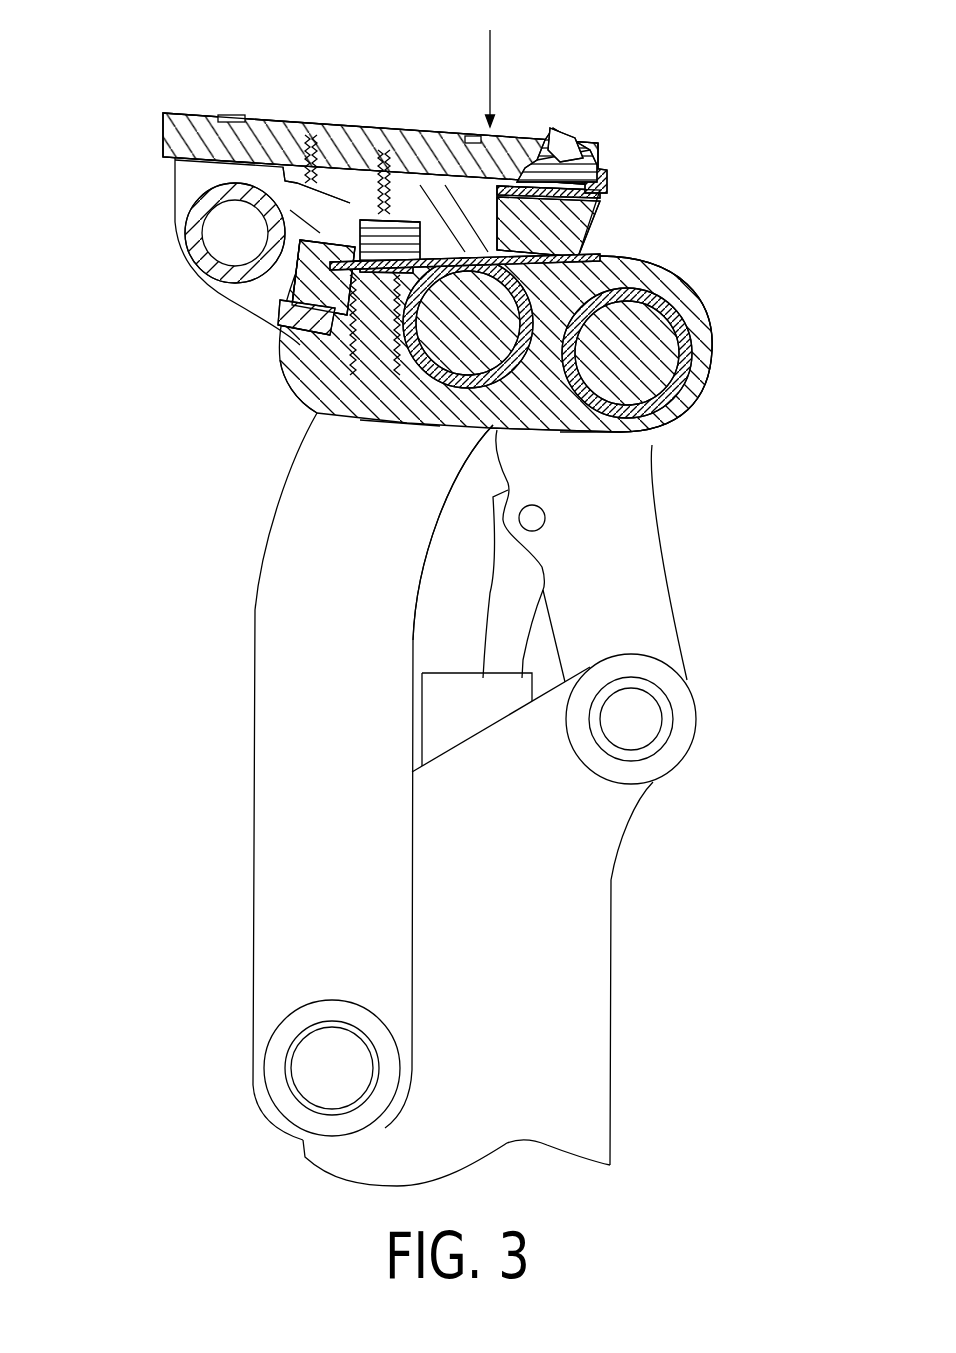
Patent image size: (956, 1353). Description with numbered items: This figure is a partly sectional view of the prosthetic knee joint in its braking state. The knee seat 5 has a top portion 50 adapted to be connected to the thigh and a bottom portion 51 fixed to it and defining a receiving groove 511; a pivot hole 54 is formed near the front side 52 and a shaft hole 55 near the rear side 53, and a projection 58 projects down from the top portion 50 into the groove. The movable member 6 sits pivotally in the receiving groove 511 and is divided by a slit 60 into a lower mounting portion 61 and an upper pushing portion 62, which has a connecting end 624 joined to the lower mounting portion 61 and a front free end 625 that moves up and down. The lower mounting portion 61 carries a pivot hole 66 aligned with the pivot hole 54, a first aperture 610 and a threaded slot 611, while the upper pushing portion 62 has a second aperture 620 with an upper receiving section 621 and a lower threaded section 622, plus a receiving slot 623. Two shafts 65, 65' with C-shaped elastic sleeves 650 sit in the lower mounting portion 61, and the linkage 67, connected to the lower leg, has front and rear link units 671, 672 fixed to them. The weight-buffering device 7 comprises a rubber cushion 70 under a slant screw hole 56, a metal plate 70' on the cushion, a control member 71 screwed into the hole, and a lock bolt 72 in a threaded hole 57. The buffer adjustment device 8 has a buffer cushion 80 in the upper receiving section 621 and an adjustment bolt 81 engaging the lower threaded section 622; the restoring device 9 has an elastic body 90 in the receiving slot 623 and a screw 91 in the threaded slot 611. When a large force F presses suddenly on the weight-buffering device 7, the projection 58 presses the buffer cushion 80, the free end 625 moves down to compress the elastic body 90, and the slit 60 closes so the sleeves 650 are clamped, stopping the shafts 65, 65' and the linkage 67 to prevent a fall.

The knee seat 5 is at (200, 108).
The top portion 50 is at (163, 127).
The receiving groove 511 is at (188, 172).
The front side 52 is at (175, 212).
The pivot hole 54 is at (283, 273).
The pivot hole 66 is at (283, 273).
The receiving slot 623 is at (275, 325).
The elastic body 90 is at (300, 318).
The screw 91 is at (305, 333).
The restoring device 9 is at (280, 356).
The threaded slot 611 is at (355, 378).
The first aperture 610 is at (313, 413).
The adjustment bolt 81 is at (372, 400).
The buffer adjustment device 8 is at (412, 222).
The buffer cushion 80 is at (405, 220).
The projection 58 is at (407, 214).
The second aperture 620 is at (362, 215).
The front free end 625 is at (290, 210).
The lower threaded section 622 is at (328, 240).
The upper receiving section 621 is at (440, 255).
The large force F is at (488, 63).
The weight-buffering device 7 is at (512, 193).
The rubber cushion 70 is at (524, 227).
The metal plate 70' is at (584, 197).
The lock bolt 72 is at (607, 180).
The threaded hole 57 is at (590, 166).
The control member 71 is at (560, 158).
The slant screw hole 56 is at (540, 160).
The rear side 53 is at (575, 252).
The movable member 6 is at (745, 333).
The slit 60 is at (660, 268).
The upper pushing portion 62 is at (690, 282).
The connecting end 624 is at (700, 312).
The shaft 65 is at (482, 372).
The shaft 65' is at (675, 353).
The C-shaped elastic sleeve 650 is at (448, 388).
The shaft hole 55 is at (412, 425).
The lower mounting portion 61 is at (587, 432).
The bottom portion 51 is at (393, 425).
The front link unit 671 is at (300, 700).
The rear link unit 672 is at (640, 557).
The linkage 67 is at (231, 910).